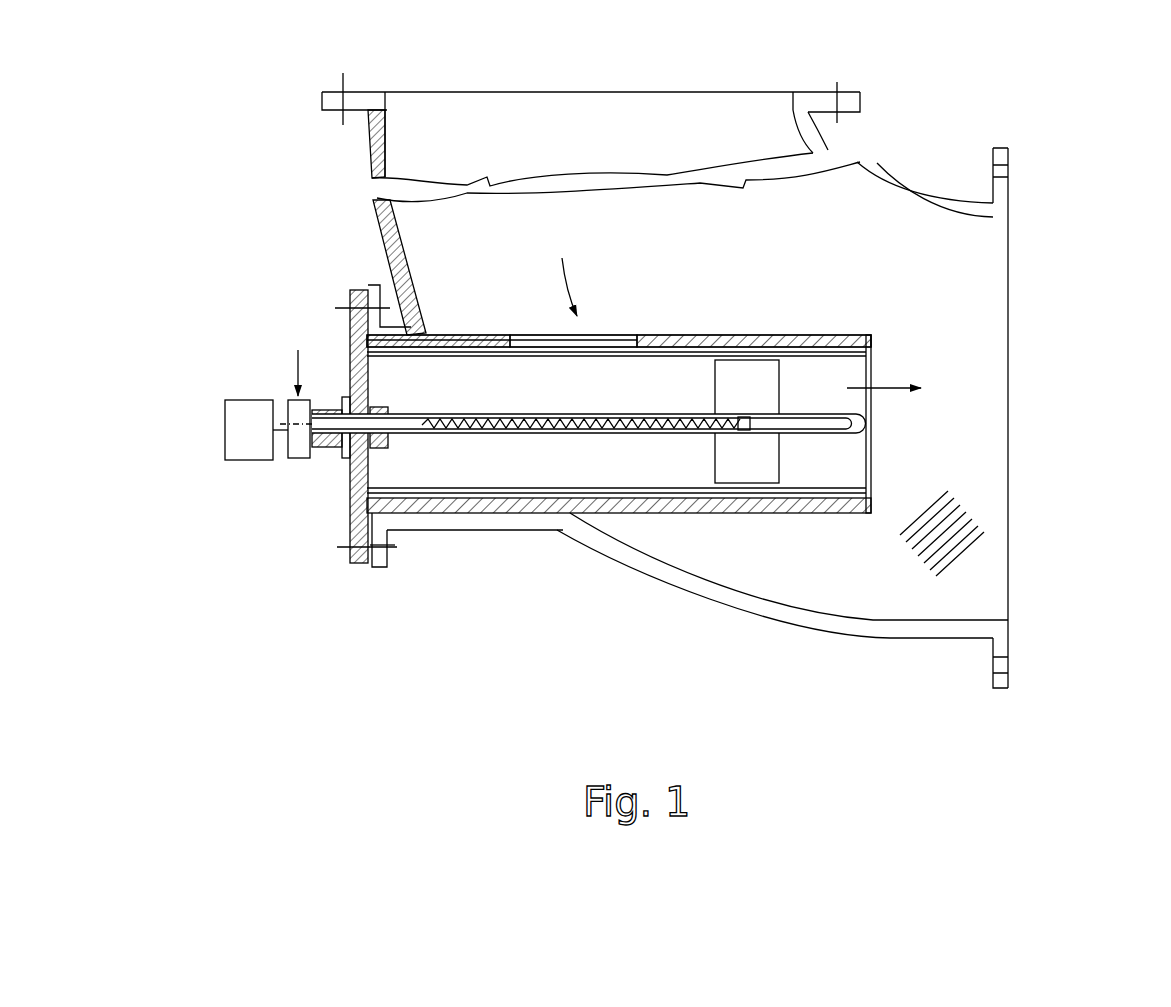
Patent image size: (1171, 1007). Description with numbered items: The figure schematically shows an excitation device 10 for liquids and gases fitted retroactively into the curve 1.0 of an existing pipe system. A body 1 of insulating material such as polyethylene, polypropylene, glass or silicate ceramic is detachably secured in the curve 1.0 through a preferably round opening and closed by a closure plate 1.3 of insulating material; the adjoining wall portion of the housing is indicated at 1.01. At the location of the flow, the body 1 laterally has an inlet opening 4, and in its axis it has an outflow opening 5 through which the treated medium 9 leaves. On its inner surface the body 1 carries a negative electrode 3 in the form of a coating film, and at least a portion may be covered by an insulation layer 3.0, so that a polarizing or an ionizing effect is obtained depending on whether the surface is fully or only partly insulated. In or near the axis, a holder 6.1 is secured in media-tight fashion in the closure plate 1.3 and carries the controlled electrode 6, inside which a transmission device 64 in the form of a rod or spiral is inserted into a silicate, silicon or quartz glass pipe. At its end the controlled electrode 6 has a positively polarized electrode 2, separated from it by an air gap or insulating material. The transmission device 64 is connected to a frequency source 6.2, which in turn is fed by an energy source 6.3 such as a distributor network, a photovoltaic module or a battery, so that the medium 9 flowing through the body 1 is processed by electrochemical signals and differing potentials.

The curve 1.0 is at (382, 224).
The housing wall 1.01 is at (448, 531).
The closure plate 1.3 is at (366, 564).
The body 1 is at (740, 331).
The positively polarized electrode 2 is at (797, 413).
The negative electrode 3 is at (678, 357).
The insulation layer 3.0 is at (747, 463).
The inlet opening 4 is at (598, 336).
The outflow opening 5 is at (873, 372).
The controlled electrode 6 is at (515, 437).
The holder 6.1 is at (328, 448).
The frequency source 6.2 is at (300, 413).
The energy source 6.3 is at (247, 418).
The transmission device 64 is at (545, 414).
The treated medium 9 is at (953, 512).
The excitation device 10 is at (708, 516).